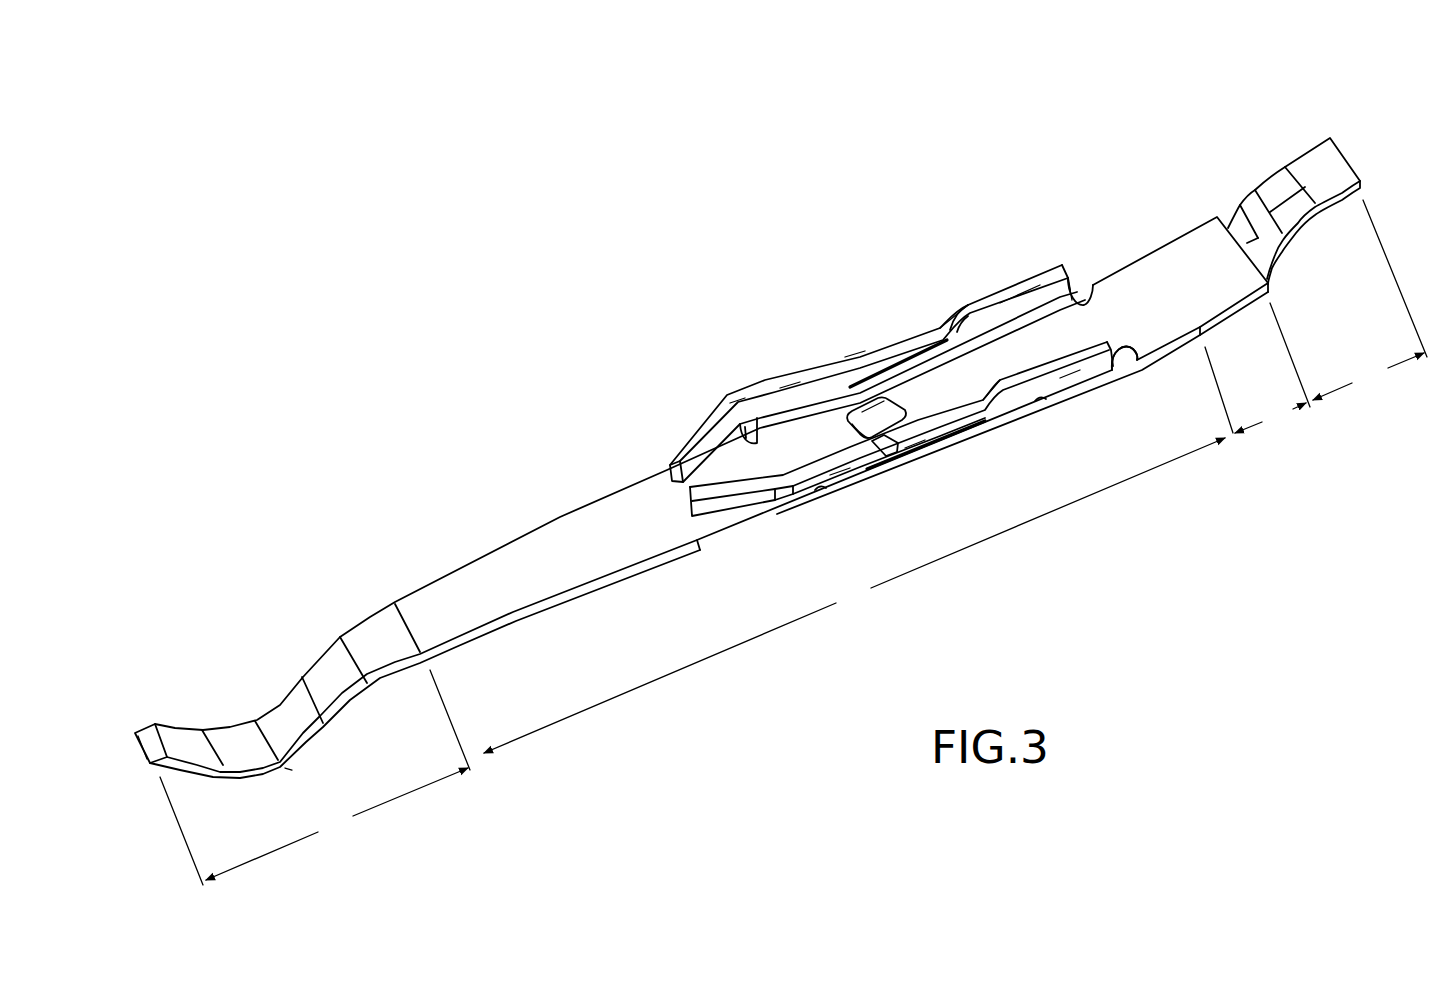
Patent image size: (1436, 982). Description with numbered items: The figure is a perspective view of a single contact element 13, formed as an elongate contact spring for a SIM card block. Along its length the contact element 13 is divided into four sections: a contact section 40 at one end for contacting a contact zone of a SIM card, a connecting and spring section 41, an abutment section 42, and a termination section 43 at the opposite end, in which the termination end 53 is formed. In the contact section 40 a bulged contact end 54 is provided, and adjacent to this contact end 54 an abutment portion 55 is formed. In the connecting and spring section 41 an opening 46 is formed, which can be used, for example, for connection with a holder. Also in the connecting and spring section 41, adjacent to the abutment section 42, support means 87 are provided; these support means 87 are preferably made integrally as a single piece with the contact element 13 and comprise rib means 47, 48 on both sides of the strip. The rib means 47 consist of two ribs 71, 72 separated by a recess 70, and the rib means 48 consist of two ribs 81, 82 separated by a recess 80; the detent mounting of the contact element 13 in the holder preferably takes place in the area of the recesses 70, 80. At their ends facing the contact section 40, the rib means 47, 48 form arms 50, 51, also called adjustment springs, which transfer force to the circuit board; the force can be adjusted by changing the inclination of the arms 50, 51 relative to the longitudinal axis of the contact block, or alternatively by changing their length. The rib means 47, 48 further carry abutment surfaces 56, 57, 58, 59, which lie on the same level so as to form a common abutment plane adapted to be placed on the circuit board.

The contact element 13 is at (919, 230).
The contact section 40 is at (315, 777).
The connecting and spring section 41 is at (858, 550).
The abutment section 42 is at (1272, 368).
The termination section 43 is at (1370, 300).
The opening 46 is at (903, 420).
The rib means 47 is at (820, 491).
The rib means 48 is at (772, 380).
The arm 50 is at (720, 505).
The arm 51 is at (690, 447).
The termination end 53 is at (1313, 168).
The bulged contact end 54 is at (290, 770).
The abutment portion 55 is at (193, 763).
The abutment surface 56 is at (838, 465).
The abutment surface 57 is at (800, 384).
The abutment surface 58 is at (1096, 373).
The abutment surface 59 is at (1040, 283).
The recess 70 is at (913, 440).
The rib 71 is at (1068, 378).
The rib 72 is at (876, 463).
The recess 80 is at (850, 356).
The rib 81 is at (1073, 276).
The rib 82 is at (745, 400).
The support means 87 is at (867, 346).